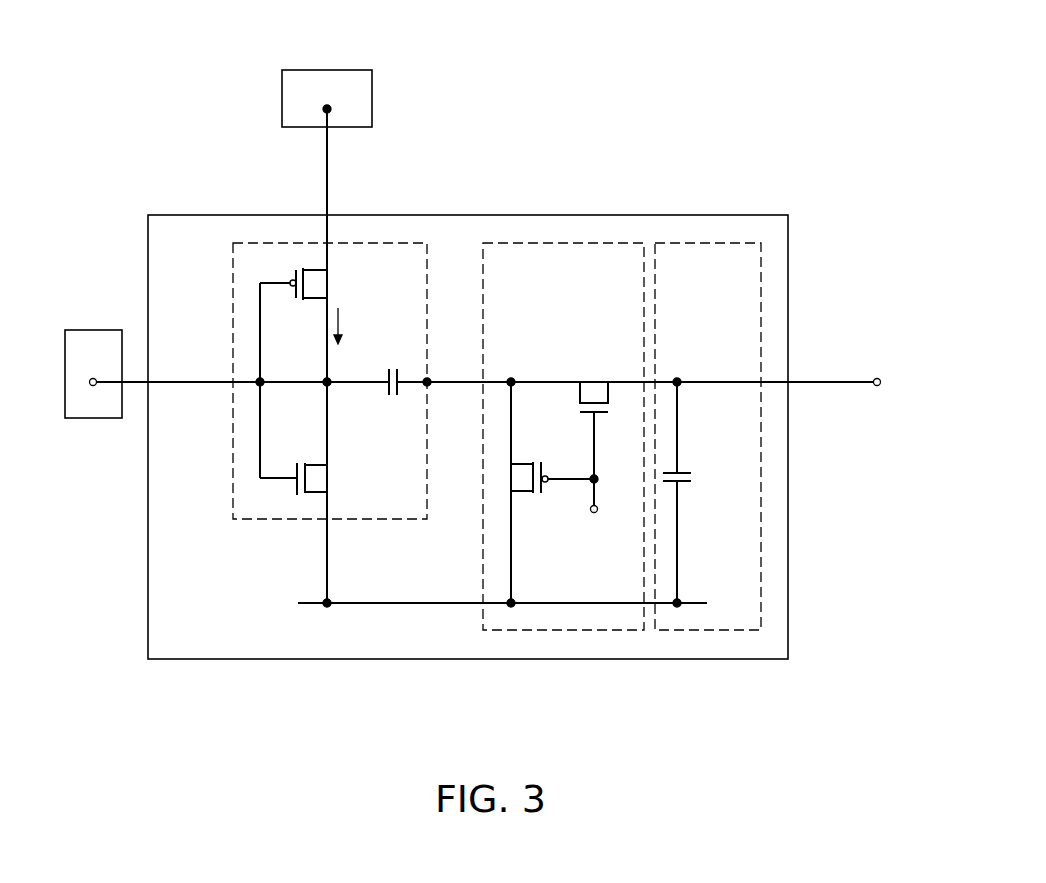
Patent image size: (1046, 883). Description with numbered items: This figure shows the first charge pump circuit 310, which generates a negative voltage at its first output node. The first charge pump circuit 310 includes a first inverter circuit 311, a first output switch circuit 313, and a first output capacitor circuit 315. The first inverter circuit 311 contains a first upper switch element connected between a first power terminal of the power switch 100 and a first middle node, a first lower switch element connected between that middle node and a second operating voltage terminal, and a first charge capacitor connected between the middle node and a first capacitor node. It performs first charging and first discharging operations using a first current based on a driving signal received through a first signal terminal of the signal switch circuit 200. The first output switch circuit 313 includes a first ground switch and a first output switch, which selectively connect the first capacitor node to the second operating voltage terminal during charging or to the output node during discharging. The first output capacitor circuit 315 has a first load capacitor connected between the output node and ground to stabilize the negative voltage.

The power switch 100 is at (327, 70).
The signal switch circuit 200 is at (93, 330).
The first charge pump circuit 310 is at (467, 215).
The first inverter circuit 311 is at (258, 520).
The first output switch circuit 313 is at (567, 631).
The first output capacitor circuit 315 is at (706, 631).